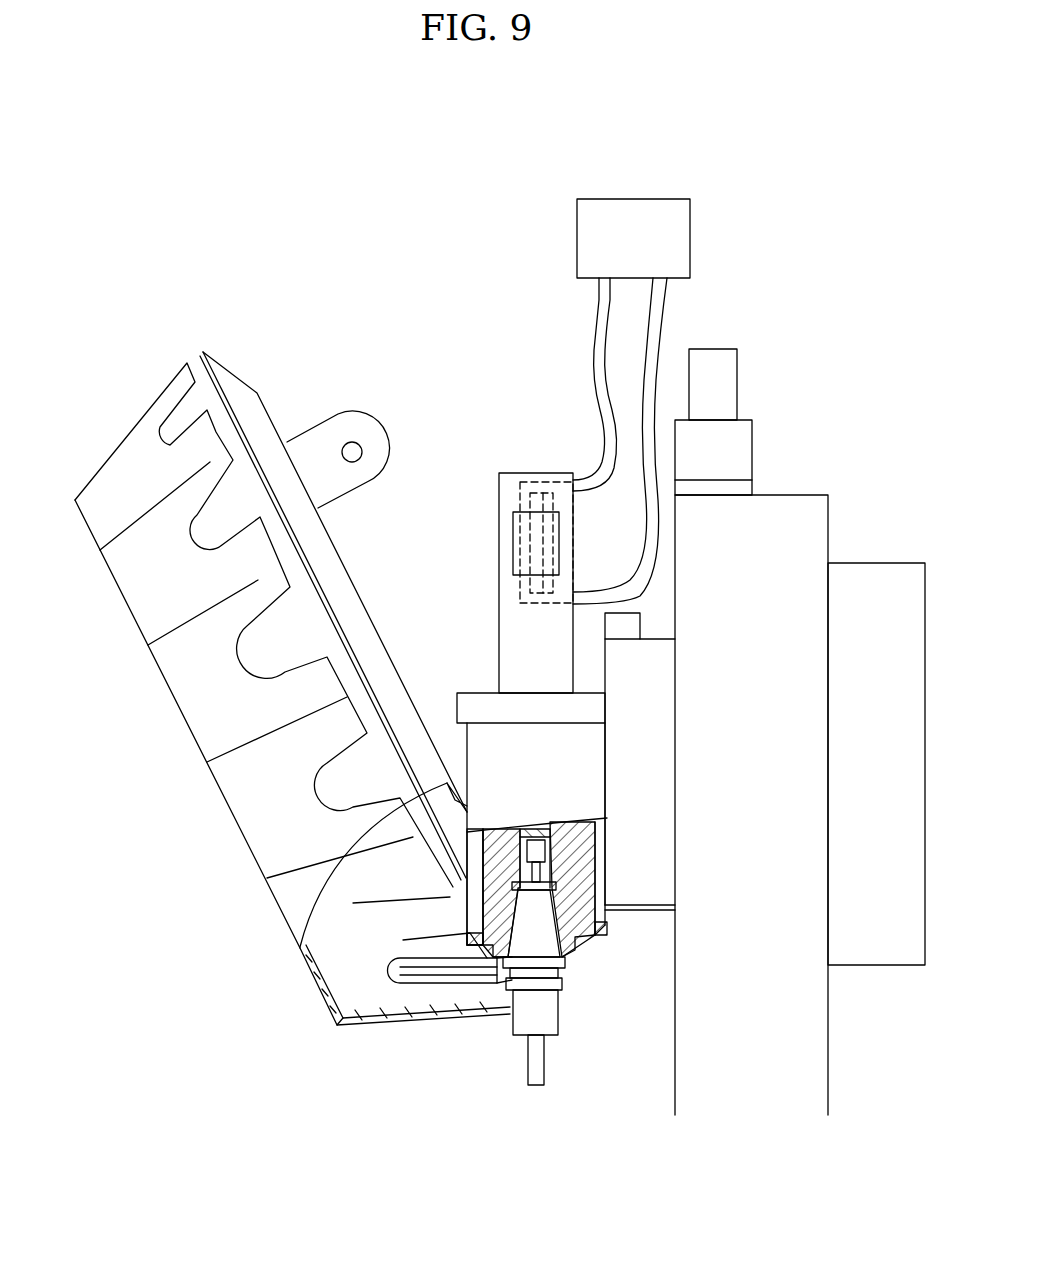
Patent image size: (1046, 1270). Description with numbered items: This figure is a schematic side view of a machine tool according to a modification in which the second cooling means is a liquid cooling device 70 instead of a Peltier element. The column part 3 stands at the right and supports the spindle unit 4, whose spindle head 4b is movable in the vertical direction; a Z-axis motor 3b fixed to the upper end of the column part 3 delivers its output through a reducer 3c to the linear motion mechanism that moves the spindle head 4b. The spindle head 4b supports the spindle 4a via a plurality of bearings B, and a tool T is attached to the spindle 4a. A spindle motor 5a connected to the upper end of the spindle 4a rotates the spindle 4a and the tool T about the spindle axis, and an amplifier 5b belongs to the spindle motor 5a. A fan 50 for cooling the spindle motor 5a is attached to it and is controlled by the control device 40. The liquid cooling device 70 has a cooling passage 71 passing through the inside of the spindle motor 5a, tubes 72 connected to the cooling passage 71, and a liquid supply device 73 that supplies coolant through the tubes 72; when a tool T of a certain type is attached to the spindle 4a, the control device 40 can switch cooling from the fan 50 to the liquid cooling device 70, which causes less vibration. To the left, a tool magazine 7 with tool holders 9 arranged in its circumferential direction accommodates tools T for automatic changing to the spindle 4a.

The column part 3 is at (828, 1017).
The Z-axis motor 3b is at (737, 372).
The reducer 3c is at (752, 448).
The control device 40 is at (888, 563).
The liquid cooling device 70 is at (522, 252).
The liquid supply device 73 is at (630, 199).
The tubes 72 is at (598, 327).
The spindle motor 5a is at (523, 473).
The cooling passage 71 is at (520, 498).
The fan 50 is at (513, 535).
The spindle unit 4 is at (456, 680).
The amplifier 5b is at (640, 626).
The spindle head 4b is at (602, 930).
The bearings B is at (607, 908).
The spindle 4a is at (565, 958).
The tool T is at (528, 1065).
The tool holder 9 is at (412, 985).
The tool magazine 7 is at (244, 355).